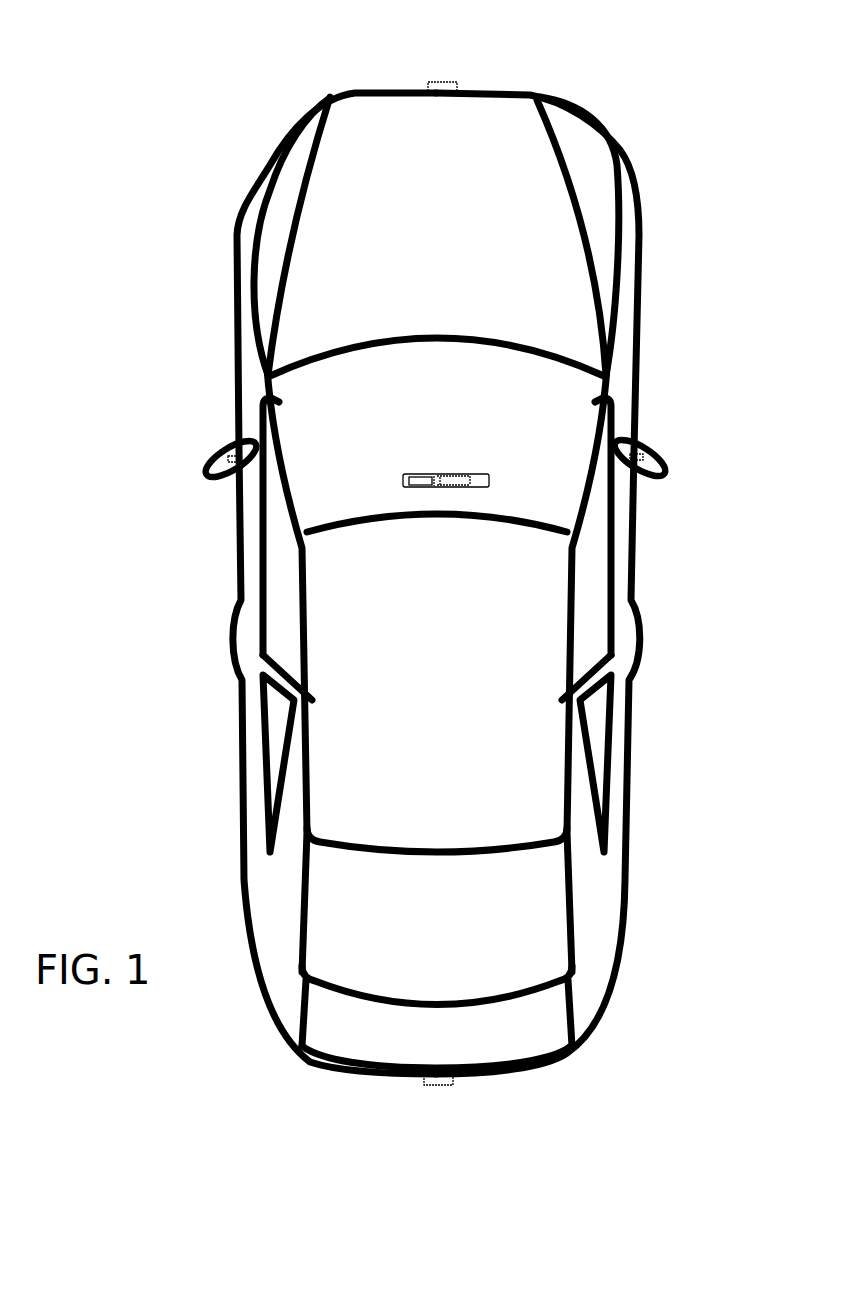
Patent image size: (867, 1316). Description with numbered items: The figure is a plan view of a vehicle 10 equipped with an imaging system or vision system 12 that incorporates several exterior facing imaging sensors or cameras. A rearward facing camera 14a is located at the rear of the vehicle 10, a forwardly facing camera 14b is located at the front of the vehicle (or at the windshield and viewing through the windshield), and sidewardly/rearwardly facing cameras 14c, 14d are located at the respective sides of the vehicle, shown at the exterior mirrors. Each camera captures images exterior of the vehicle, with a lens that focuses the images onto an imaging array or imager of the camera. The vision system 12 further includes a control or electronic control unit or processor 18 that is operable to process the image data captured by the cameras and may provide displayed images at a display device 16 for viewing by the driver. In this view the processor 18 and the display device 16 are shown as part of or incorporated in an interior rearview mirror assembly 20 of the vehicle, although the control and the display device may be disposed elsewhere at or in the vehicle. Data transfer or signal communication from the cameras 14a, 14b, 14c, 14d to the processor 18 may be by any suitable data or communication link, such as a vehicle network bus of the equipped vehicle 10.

The vehicle 10 is at (181, 173).
The vision system 12 is at (376, 1112).
The rearward facing camera 14a is at (440, 1084).
The forwardly facing camera 14b is at (445, 82).
The sidewardly/rearwardly facing camera 14c is at (227, 453).
The sidewardly/rearwardly facing camera 14d is at (647, 453).
The display device 16 is at (422, 480).
The electronic control unit 18 is at (442, 475).
The interior rearview mirror assembly 20 is at (490, 475).